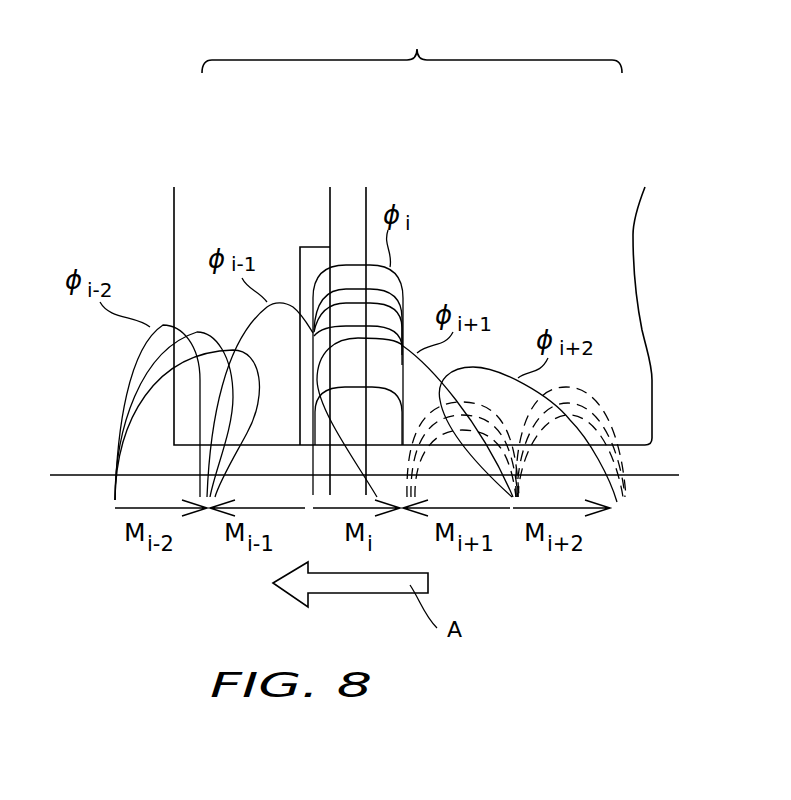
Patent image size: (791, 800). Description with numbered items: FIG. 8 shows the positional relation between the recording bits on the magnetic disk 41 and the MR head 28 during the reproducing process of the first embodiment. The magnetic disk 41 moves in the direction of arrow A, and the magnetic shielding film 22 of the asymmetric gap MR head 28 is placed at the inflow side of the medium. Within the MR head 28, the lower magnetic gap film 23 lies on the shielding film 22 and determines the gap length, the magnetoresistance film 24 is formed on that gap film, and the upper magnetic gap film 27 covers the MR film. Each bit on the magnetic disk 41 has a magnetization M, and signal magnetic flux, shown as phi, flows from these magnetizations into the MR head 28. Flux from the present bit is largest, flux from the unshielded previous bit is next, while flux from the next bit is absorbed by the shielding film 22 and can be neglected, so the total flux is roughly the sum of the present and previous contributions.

The MR head 28 is at (412, 45).
The upper magnetic gap film 27 is at (242, 203).
The magnetoresistance film 24 is at (308, 268).
The lower magnetic gap film 23 is at (343, 205).
The lower magnetic shielding film 22 is at (492, 213).
The magnetic disk 41 is at (665, 497).